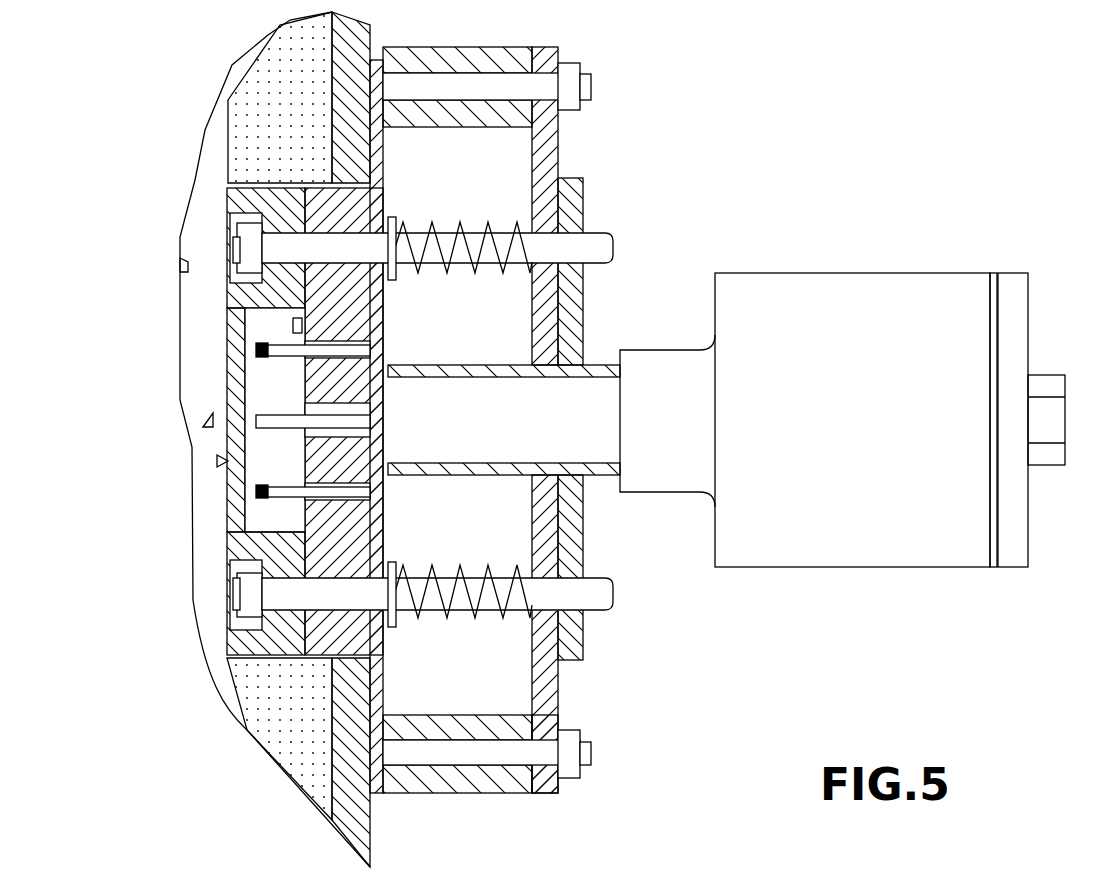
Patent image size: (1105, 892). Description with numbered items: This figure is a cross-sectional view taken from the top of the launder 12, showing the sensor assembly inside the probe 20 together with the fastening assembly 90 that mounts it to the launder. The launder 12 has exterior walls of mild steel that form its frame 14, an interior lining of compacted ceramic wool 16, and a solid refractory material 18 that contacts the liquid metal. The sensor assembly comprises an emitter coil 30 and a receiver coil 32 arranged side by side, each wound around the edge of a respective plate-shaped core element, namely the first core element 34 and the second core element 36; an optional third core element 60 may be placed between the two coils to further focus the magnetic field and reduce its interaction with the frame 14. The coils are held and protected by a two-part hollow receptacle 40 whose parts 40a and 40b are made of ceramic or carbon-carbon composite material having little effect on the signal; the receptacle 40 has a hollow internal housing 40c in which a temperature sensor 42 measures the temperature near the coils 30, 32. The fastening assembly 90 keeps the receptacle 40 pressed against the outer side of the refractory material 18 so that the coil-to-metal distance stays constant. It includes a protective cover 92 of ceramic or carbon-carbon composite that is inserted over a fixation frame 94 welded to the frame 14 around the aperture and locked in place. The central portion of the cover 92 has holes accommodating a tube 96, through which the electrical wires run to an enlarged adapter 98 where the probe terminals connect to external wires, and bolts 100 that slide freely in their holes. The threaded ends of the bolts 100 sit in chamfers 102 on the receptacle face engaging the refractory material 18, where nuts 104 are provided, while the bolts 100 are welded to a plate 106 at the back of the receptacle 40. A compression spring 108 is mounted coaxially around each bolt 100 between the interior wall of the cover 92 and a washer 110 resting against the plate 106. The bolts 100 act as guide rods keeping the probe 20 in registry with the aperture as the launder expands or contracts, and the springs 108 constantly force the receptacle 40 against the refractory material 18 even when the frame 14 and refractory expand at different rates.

The launder 12 is at (134, 127).
The frame 14 is at (370, 817).
The compacted ceramic wool 16 is at (240, 100).
The refractory material 18 is at (190, 400).
The probe 20 is at (842, 302).
The emitter coil 30 is at (262, 492).
The receiver coil 32 is at (262, 350).
The first core element 34 is at (360, 492).
The second core element 36 is at (383, 347).
The receptacle 40 is at (206, 491).
The first part of the receptacle 40a is at (232, 530).
The second part of the receptacle 40b is at (228, 708).
The hollow internal housing 40c is at (262, 385).
The temperature sensor 42 is at (297, 325).
The third core element 60 is at (383, 425).
The fastening assembly 90 is at (632, 100).
The protective cover 92 is at (545, 790).
The fixation frame 94 is at (388, 790).
The tube 96 is at (590, 365).
The enlarged adapter 98 is at (890, 290).
The bolts 100 is at (597, 590).
The chamfers 102 is at (235, 628).
The nuts 104 is at (252, 597).
The plate 106 is at (388, 215).
The compression spring 108 is at (502, 615).
The washer 110 is at (395, 622).